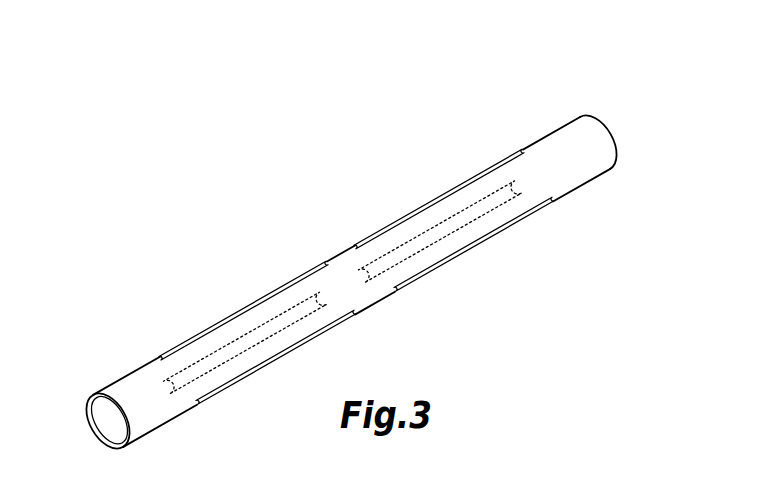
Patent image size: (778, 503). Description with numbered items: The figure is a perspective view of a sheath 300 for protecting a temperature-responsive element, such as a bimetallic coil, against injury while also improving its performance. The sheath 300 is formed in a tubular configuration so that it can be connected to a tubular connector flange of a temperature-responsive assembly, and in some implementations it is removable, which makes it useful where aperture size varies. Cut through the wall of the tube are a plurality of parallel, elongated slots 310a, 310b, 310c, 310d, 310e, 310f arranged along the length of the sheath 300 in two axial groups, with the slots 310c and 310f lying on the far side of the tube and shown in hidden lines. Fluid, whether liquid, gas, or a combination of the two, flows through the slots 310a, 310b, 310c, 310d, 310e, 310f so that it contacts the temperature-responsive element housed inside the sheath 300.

The sheath 300 is at (606, 98).
The slot 310a is at (553, 198).
The slot 310b is at (522, 152).
The slot 310c is at (390, 243).
The slot 310d is at (357, 312).
The slot 310e is at (325, 262).
The slot 310f is at (197, 345).